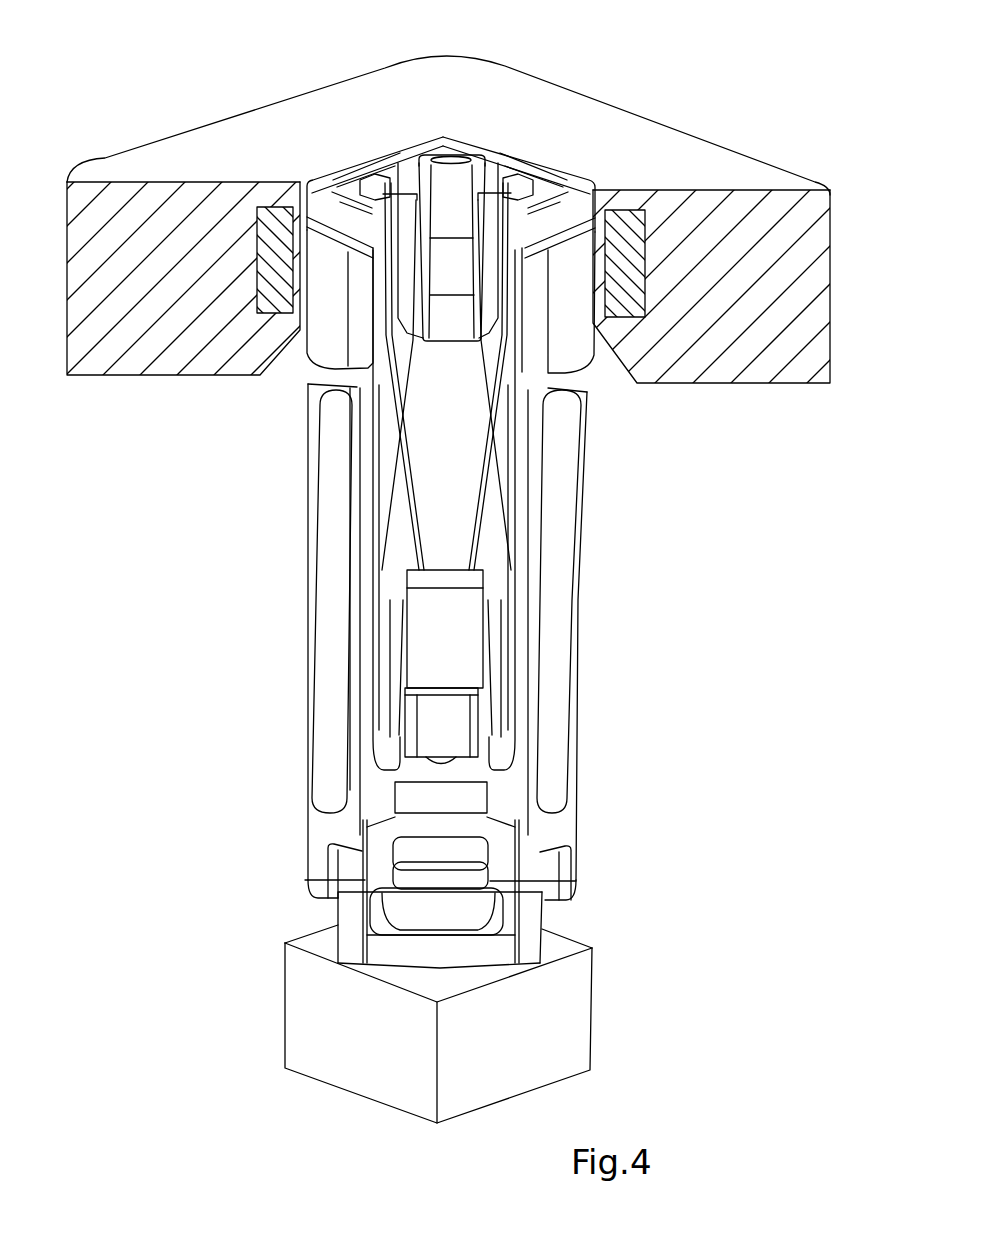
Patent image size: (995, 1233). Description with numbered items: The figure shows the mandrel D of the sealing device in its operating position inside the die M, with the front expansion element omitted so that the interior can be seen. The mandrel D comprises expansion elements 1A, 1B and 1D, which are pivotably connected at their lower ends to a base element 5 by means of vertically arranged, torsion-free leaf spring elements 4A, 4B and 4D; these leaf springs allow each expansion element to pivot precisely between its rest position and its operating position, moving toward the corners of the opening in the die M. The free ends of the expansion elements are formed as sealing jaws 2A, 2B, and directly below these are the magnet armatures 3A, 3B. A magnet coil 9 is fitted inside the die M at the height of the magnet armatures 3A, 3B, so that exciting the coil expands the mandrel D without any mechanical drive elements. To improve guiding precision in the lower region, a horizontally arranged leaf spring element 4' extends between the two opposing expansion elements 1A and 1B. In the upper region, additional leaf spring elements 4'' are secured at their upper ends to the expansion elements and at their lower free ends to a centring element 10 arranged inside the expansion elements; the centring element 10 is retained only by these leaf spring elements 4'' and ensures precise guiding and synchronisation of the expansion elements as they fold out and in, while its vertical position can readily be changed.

The die M is at (378, 100).
The expansion element 1D is at (455, 173).
The sealing jaw 2A is at (317, 210).
The sealing jaw 2B is at (578, 220).
The magnet coil 9 is at (272, 297).
The magnet armature 3A is at (330, 313).
The magnet armature 3B is at (557, 342).
The additional leaf spring element 4'' is at (447, 460).
The mandrel D is at (236, 541).
The expansion element 1A is at (332, 567).
The expansion element 1B is at (557, 570).
The centring element 10 is at (453, 635).
The leaf spring element 4D is at (458, 823).
The leaf spring element 4' is at (401, 881).
The leaf spring element 4A is at (337, 918).
The leaf spring element 4B is at (545, 920).
The base element 5 is at (563, 1012).